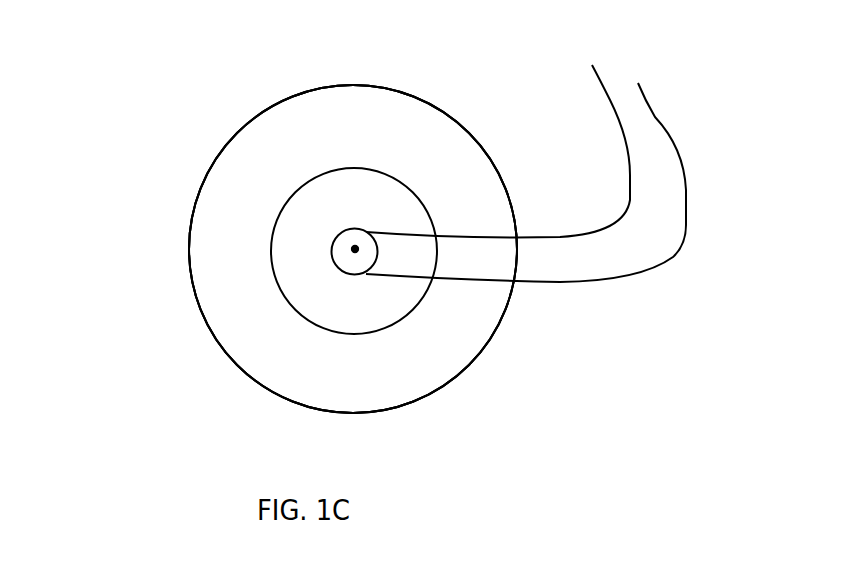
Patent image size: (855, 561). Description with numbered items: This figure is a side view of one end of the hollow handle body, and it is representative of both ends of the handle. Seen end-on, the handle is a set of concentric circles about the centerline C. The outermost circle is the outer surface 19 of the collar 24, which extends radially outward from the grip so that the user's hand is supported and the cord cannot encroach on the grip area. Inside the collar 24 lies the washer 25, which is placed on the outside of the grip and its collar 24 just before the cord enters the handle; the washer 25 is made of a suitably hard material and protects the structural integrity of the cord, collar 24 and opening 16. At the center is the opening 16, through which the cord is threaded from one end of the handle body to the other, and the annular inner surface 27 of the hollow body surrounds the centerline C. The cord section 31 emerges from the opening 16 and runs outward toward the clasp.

The outer surface of the collar 19 is at (282, 93).
The collar 24 is at (251, 136).
The washer 25 is at (279, 194).
The opening 16 is at (317, 247).
The inner surface 27 is at (240, 347).
The centerline C is at (370, 263).
The cord section 31 is at (599, 294).